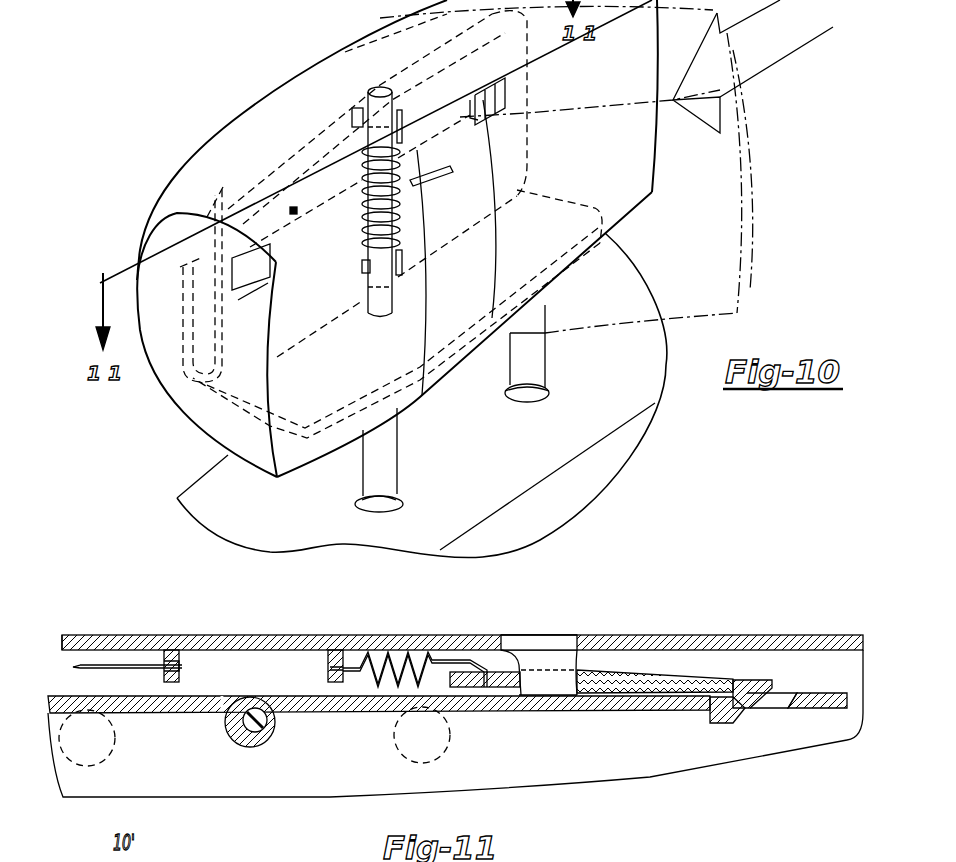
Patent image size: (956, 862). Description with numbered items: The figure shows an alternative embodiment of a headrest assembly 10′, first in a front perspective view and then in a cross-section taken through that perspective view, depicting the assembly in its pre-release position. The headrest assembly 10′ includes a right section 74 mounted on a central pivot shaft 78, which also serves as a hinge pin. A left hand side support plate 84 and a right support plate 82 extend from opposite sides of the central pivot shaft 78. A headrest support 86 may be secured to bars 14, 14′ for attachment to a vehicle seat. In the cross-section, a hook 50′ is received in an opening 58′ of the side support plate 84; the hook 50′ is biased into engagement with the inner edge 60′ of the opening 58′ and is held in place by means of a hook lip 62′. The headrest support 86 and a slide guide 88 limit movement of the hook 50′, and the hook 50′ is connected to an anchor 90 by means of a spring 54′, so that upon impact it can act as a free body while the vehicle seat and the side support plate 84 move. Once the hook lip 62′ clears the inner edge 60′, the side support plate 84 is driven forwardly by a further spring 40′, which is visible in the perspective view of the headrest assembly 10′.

In FIG. 10, the headrest assembly 10′ is at (244, 114).
In FIG. 11, the headrest assembly 10′ is at (136, 635).
In FIG. 10, the bars 14 is at (372, 477).
In FIG. 11, the bars 14′ is at (446, 746).
In FIG. 10, the spring 40′ is at (360, 250).
In FIG. 11, the hook 50′ is at (748, 682).
In FIG. 11, the spring 54′ is at (432, 658).
In FIG. 11, the opening 58′ is at (763, 708).
In FIG. 11, the inner edge 60′ is at (741, 690).
In FIG. 11, the hook lip 62′ is at (708, 713).
In FIG. 10, the right section 74 is at (130, 277).
In FIG. 10, the central pivot shaft 78 is at (380, 90).
In FIG. 11, the central pivot shaft 78 is at (228, 722).
In FIG. 10, the right support plate 82 is at (205, 381).
In FIG. 11, the right support plate 82 is at (62, 698).
In FIG. 10, the side support plate 84 is at (519, 171).
In FIG. 11, the side support plate 84 is at (820, 709).
In FIG. 10, the headrest support 86 is at (433, 368).
In FIG. 11, the headrest support 86 is at (653, 634).
In FIG. 11, the slide guide 88 is at (548, 650).
In FIG. 11, the anchor 90 is at (337, 656).